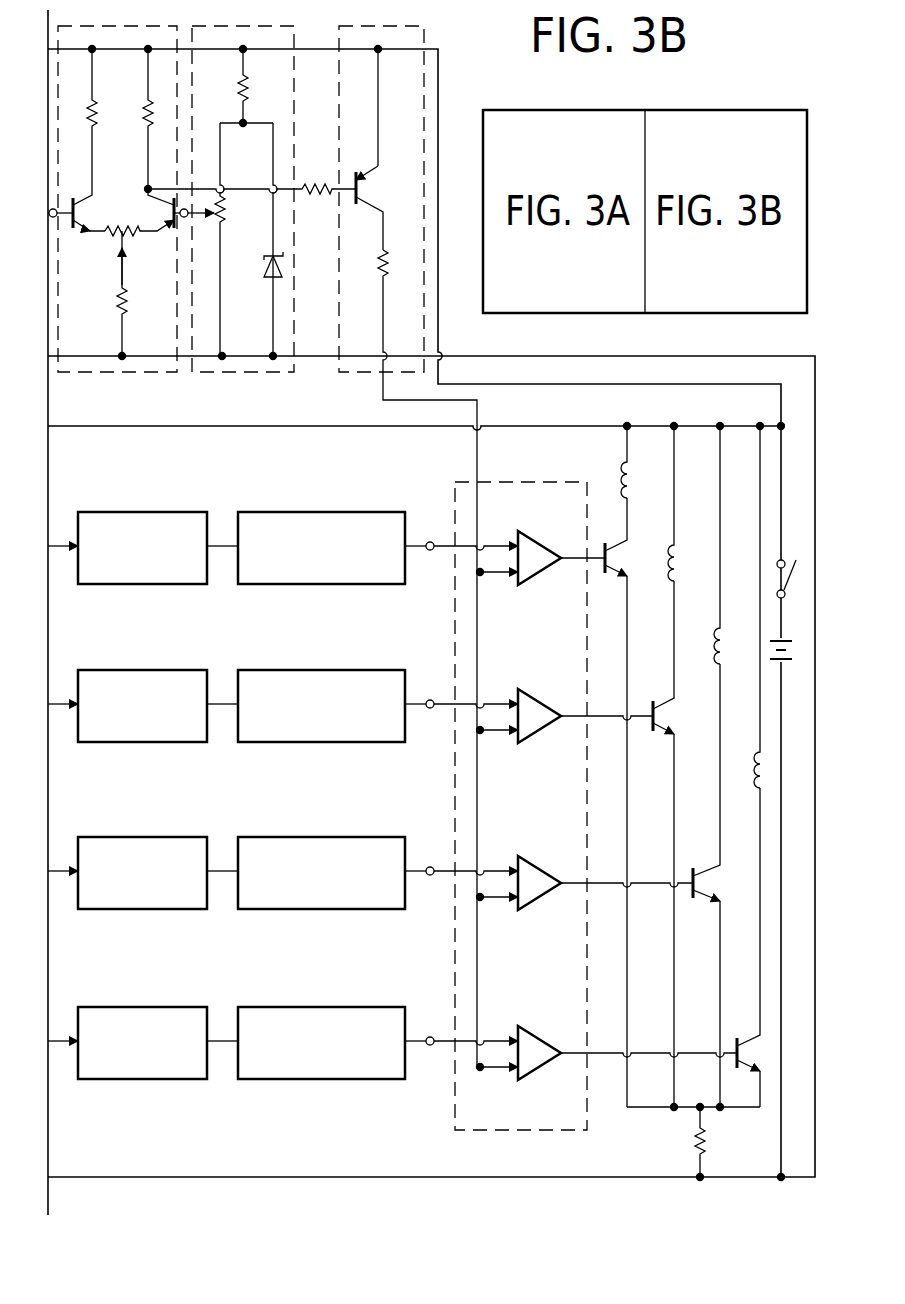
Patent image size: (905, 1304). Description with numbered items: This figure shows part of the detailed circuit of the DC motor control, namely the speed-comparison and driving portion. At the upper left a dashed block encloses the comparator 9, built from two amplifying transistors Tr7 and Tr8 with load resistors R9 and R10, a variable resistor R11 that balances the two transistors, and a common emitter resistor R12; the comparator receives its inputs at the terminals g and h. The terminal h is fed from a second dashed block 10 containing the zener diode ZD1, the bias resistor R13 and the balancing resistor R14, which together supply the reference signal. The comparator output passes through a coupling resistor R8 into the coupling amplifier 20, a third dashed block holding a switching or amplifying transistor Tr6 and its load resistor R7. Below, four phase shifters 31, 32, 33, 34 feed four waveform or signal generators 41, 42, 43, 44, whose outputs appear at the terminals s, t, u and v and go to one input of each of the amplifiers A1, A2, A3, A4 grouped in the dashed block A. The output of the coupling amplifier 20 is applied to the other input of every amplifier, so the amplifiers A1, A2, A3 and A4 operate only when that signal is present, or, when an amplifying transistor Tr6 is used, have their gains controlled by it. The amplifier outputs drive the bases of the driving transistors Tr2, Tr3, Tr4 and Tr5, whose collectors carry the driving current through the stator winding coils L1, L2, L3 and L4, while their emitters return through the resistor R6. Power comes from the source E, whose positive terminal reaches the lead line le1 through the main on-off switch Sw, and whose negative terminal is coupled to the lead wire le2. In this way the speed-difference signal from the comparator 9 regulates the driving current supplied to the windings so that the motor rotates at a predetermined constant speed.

The comparator 9 is at (136, 373).
The reference voltage circuit 10 is at (246, 373).
The coupling amplifier 20 is at (346, 373).
The phase shifter 31 is at (158, 512).
The phase shifter 32 is at (158, 670).
The phase shifter 33 is at (158, 836).
The phase shifter 34 is at (158, 1006).
The waveform generator 41 is at (314, 512).
The waveform generator 42 is at (314, 670).
The waveform generator 43 is at (314, 836).
The waveform generator 44 is at (314, 1006).
The amplifier block A is at (454, 490).
The amplifier A1 is at (543, 542).
The amplifier A2 is at (548, 700).
The amplifier A3 is at (550, 866).
The amplifier A4 is at (554, 1032).
The lead line le1 is at (554, 426).
The lead wire le2 is at (248, 1177).
The stator winding coil L1 is at (628, 474).
The stator winding coil L2 is at (674, 550).
The stator winding coil L3 is at (712, 626).
The stator winding coil L4 is at (750, 756).
The transistor Tr2 is at (635, 802).
The transistor Tr3 is at (683, 844).
The transistor Tr4 is at (726, 885).
The transistor Tr5 is at (766, 1083).
The switching or amplifying transistor Tr6 is at (362, 178).
The amplifying transistor Tr7 is at (80, 214).
The amplifying transistor Tr8 is at (160, 196).
The resistor R6 is at (694, 1146).
The load resistor R7 is at (381, 274).
The coupling resistor R8 is at (318, 184).
The load resistor R9 is at (98, 108).
The load resistor R10 is at (149, 111).
The variable resistor R11 is at (115, 236).
The emitter resistor R12 is at (124, 298).
The bias resistor R13 is at (244, 88).
The balancing resistor R14 is at (222, 190).
The zener diode ZD1 is at (268, 257).
The main or on-off switch Sw is at (778, 568).
The power source E is at (772, 650).
The output terminal s is at (430, 542).
The output terminal t is at (431, 698).
The output terminal u is at (433, 865).
The output terminal v is at (436, 1032).
The input terminal g is at (53, 204).
The input terminal h is at (186, 218).